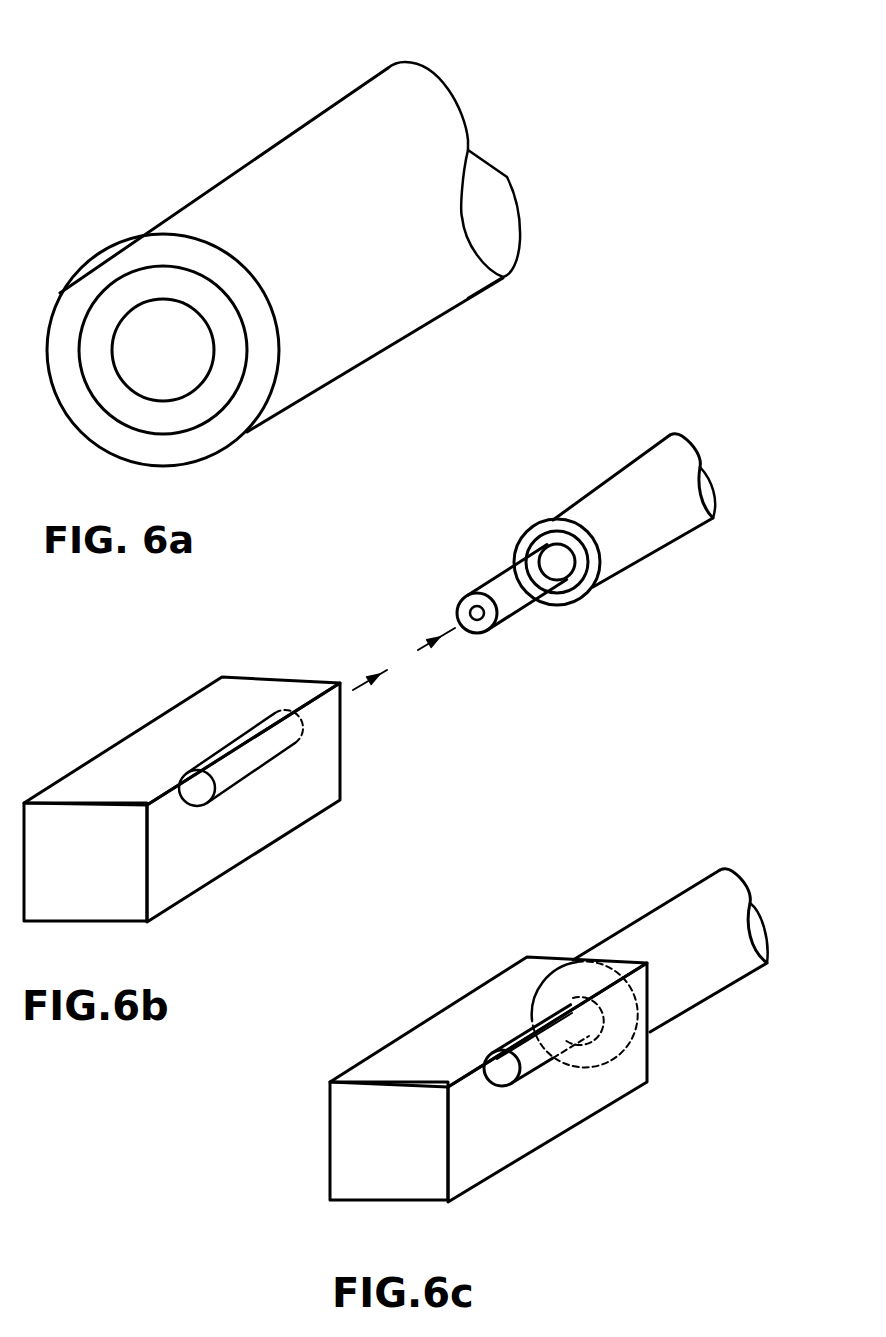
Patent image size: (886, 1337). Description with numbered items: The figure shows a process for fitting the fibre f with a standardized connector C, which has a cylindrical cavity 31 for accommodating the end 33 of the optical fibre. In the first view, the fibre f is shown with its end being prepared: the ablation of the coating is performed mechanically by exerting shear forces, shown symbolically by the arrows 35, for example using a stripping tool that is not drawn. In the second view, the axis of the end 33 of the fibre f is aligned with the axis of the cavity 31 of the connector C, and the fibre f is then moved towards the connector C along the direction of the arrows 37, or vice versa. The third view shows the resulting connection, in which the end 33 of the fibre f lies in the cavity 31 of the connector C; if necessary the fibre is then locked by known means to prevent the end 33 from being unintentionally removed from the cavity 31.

In FIG. 6B, the cylindrical cavity 31 is at (293, 740).
In FIG. 6C, the cylindrical cavity 31 is at (498, 1020).
In FIG. 6B, the end of the optical fibre 33 is at (505, 606).
In FIG. 6C, the end of the optical fibre 33 is at (533, 1055).
In FIG. 6A, the arrows 35 is at (255, 133).
In FIG. 6B, the arrows 37 is at (360, 688).
In FIG. 6A, the fibre f is at (357, 66).
In FIG. 6B, the fibre f is at (690, 572).
In FIG. 6C, the fibre f is at (743, 1017).
In FIG. 6B, the connector C is at (232, 887).
In FIG. 6C, the connector C is at (538, 1172).